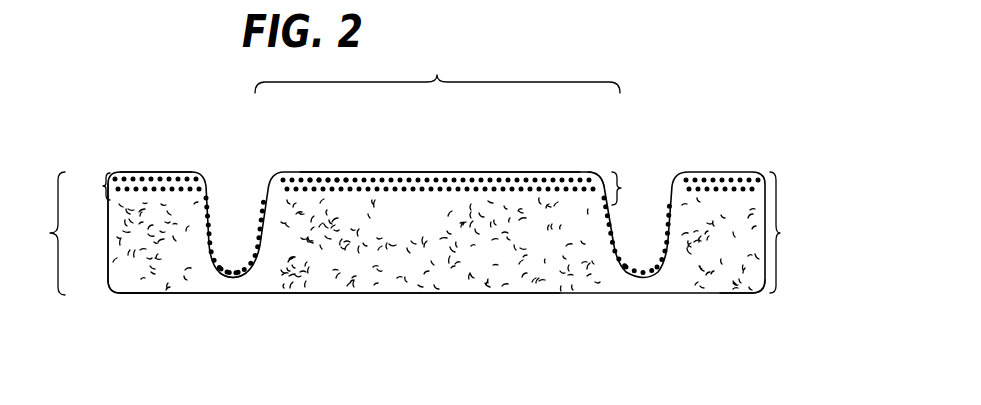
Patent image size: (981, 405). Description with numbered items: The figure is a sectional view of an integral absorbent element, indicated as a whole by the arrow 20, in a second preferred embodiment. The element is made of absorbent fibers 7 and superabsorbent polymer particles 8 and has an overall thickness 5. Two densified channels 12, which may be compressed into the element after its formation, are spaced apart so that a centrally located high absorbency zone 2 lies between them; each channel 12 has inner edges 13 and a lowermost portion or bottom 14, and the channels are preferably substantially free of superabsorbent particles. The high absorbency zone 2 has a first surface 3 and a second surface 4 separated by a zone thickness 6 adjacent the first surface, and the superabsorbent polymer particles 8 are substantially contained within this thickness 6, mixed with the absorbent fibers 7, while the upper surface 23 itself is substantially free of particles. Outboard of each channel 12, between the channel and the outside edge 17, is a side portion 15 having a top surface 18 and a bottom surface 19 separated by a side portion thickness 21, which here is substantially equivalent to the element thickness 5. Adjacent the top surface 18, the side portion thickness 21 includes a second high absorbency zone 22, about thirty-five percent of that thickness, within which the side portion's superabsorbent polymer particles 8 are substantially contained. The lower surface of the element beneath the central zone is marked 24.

The absorbent article 20 is at (675, 105).
The high absorbency zone 2 is at (437, 117).
The side portion thickness 21 is at (108, 233).
The second high absorbency zone thickness 22 is at (133, 184).
The high absorbency zone thickness 6 is at (628, 188).
The absorbent element thickness 5 is at (743, 232).
The top surface 18 is at (153, 177).
The inner edges 13 is at (268, 178).
The superabsorbent polymer particles 8 is at (345, 176).
The upper surface 23 is at (455, 172).
The first surface 3 is at (563, 170).
The outside edge 17 is at (110, 277).
The side portions 15 is at (140, 275).
The bottom surface 19 is at (162, 293).
The densified channels 12 is at (213, 265).
The channel bottom 14 is at (232, 278).
The lower surface 24 is at (423, 295).
The absorbent fibers 7 is at (493, 248).
The second surface 4 is at (578, 197).